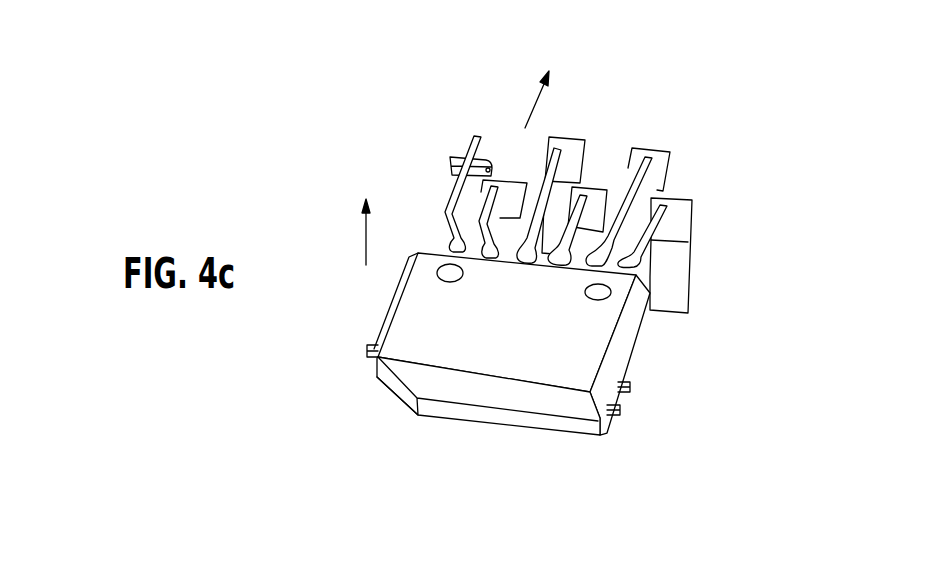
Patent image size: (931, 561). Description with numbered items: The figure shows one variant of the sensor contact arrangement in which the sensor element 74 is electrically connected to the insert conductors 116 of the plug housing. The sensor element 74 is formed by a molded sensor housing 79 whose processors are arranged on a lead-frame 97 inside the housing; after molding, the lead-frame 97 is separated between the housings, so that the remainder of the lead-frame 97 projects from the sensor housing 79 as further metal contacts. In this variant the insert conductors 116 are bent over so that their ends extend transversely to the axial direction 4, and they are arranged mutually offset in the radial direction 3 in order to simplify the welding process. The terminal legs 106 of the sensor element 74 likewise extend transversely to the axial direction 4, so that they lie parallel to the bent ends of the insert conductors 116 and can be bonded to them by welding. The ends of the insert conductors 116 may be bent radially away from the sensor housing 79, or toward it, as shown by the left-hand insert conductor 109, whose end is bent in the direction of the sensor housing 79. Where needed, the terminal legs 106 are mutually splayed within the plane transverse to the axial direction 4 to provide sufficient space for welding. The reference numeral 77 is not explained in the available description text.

The radial direction 3 is at (541, 86).
The axial direction 4 is at (366, 237).
The sensor element 74 is at (512, 374).
The component body 77 is at (512, 374).
The sensor housing 79 is at (502, 340).
The lead-frame 97 is at (367, 349).
The terminal legs 106 is at (642, 170).
The left-hand insert conductor 109 is at (452, 160).
The insert conductors 116 is at (658, 182).